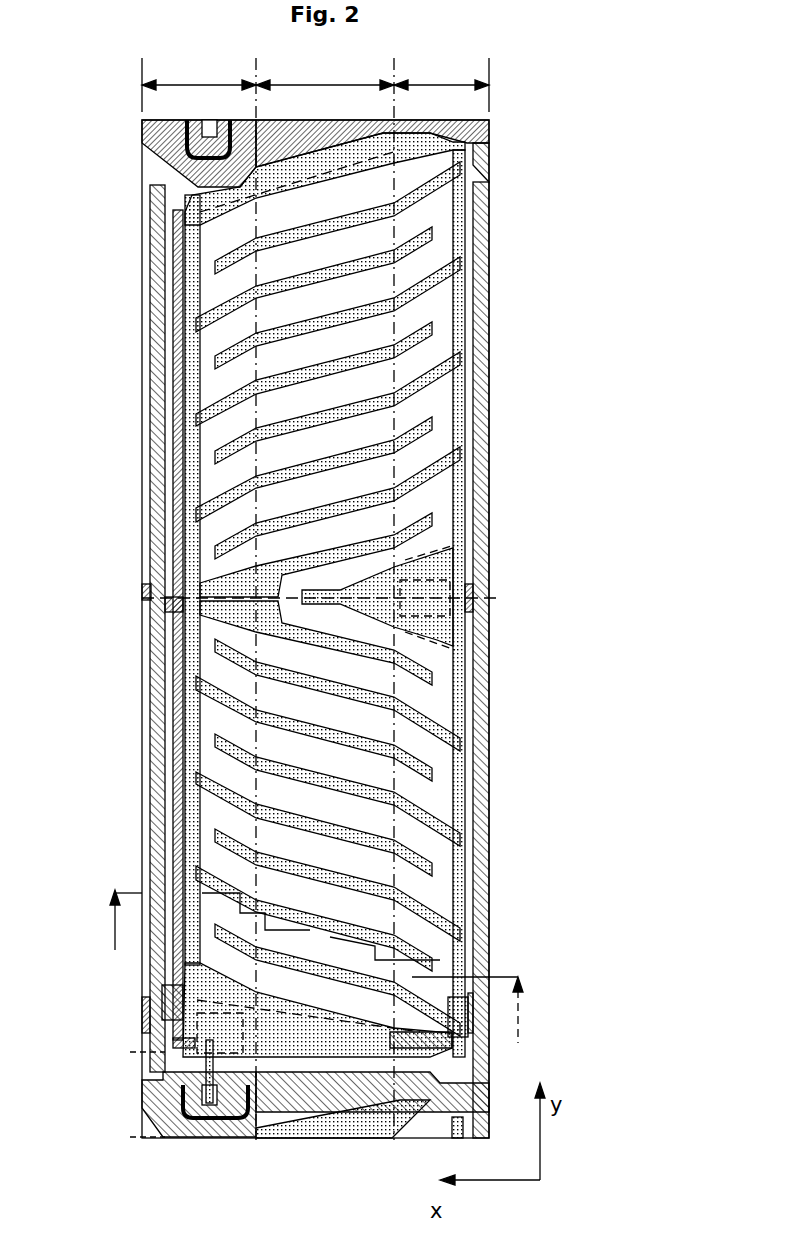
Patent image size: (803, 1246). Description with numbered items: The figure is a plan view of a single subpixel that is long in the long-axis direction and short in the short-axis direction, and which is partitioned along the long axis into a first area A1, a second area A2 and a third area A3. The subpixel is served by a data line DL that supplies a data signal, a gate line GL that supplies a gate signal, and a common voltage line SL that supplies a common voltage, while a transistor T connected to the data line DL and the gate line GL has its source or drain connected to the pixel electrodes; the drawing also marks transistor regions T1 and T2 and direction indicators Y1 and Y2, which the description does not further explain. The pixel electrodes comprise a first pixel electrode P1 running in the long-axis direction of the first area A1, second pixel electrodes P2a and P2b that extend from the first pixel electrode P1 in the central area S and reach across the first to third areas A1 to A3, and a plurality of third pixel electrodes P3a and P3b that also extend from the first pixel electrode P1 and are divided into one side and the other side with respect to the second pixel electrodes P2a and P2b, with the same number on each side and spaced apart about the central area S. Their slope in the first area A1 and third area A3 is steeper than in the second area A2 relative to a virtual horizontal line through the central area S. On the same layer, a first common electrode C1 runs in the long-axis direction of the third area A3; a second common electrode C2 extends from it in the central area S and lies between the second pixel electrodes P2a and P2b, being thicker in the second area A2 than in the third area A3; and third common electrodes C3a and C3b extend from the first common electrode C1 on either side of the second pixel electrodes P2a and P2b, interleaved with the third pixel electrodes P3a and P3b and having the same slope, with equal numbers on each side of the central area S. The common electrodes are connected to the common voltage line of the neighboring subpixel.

The first area A1 is at (199, 81).
The second area A2 is at (325, 70).
The third area A3 is at (441, 81).
The third common electrodes on one side C3a is at (462, 356).
The third common electrodes on the other side C3b is at (462, 826).
The first common electrode C1 is at (468, 888).
The second common electrode C2 is at (457, 548).
The data line DL is at (157, 855).
The common voltage line SL is at (178, 488).
The gate line GL is at (150, 1110).
The first pixel electrode P1 is at (193, 742).
The second pixel electrode on one side P2a is at (445, 508).
The second pixel electrode on the other side P2b is at (445, 664).
The third pixel electrodes on one side P3a is at (200, 410).
The third pixel electrodes on the other side P3b is at (200, 778).
The central area S is at (142, 598).
The transistor T is at (190, 1138).
The first thin film transistor T1 is at (130, 1052).
The second thin film transistor T2 is at (130, 1137).
The first direction Y1 is at (118, 936).
The second direction Y2 is at (472, 1027).